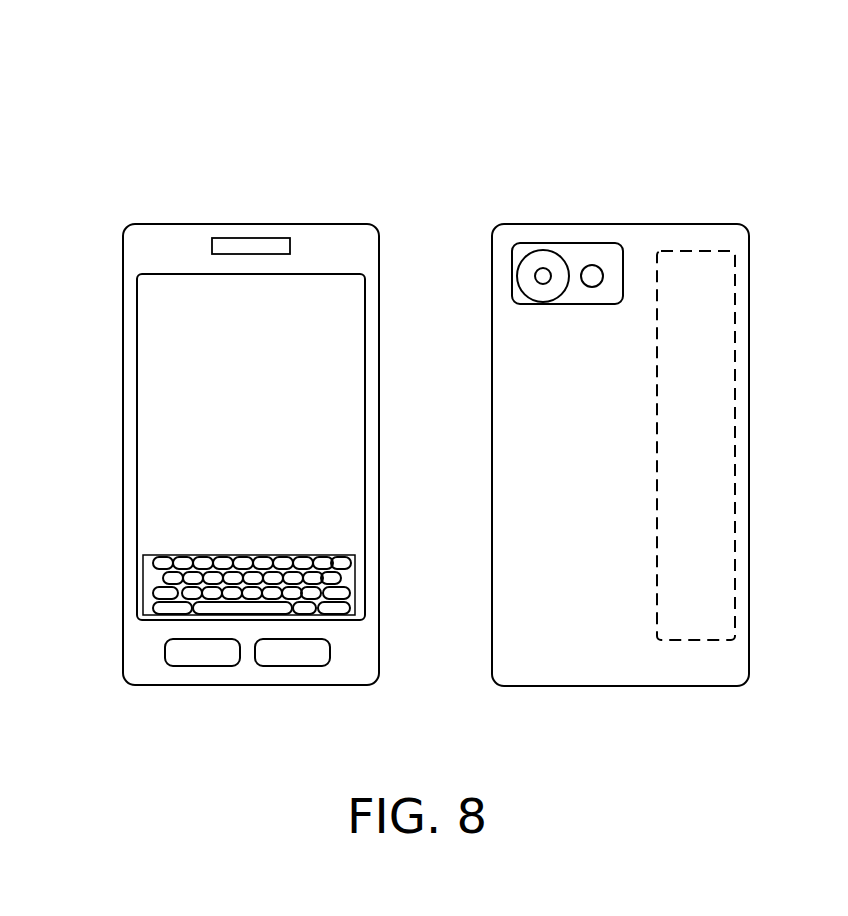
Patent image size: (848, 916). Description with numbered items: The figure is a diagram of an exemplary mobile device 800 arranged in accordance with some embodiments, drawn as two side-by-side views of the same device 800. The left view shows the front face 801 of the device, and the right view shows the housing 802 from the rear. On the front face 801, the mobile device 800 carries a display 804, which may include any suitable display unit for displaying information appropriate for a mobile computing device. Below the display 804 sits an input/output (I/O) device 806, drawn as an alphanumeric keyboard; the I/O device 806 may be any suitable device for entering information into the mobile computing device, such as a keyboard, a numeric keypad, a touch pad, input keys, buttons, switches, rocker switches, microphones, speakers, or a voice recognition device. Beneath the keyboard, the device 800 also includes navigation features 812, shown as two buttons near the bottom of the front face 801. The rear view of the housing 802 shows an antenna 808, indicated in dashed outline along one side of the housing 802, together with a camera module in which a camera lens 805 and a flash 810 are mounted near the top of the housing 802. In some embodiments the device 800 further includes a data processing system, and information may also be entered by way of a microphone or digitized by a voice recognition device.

The mobile device 800 is at (120, 73).
The front side of device 801 is at (226, 212).
The housing 802 is at (543, 212).
The display 804 is at (270, 460).
The camera 805 is at (528, 287).
The input/output (I/O) device 806 is at (145, 582).
The antenna 808 is at (714, 457).
The flash 810 is at (602, 267).
The navigation features 812 is at (183, 658).